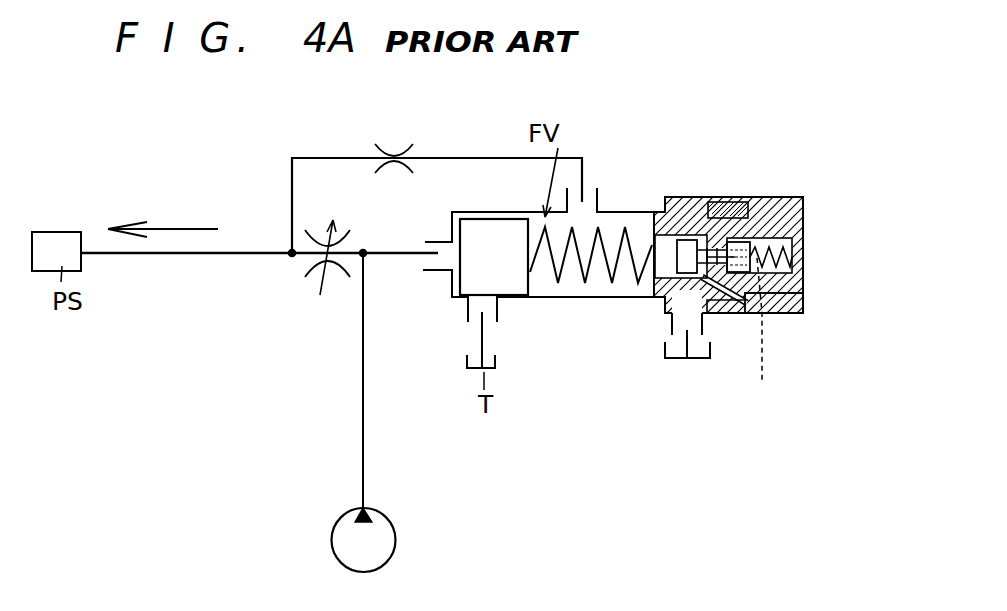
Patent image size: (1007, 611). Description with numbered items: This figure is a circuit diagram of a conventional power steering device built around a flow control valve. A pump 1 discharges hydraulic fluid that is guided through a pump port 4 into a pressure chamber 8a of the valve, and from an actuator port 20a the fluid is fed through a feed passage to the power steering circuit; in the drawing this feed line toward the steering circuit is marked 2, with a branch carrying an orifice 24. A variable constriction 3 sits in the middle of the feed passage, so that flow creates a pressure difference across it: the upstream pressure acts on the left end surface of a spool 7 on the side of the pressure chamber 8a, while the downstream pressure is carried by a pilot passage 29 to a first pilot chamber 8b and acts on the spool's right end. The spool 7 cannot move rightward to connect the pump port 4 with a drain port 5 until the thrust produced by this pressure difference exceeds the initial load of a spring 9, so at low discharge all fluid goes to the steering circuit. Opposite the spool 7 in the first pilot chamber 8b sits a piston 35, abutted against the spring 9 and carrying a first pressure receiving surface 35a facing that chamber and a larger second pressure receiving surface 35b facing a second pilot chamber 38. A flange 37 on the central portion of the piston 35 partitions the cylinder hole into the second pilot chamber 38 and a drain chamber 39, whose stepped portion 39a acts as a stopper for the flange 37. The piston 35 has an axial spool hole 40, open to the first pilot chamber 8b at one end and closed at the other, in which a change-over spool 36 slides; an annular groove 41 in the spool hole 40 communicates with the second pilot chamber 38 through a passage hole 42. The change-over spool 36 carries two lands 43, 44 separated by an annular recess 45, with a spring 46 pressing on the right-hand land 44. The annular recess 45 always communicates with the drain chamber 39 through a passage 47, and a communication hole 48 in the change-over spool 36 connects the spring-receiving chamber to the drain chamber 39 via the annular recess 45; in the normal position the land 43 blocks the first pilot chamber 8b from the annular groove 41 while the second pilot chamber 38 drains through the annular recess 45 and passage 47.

The pump 1 is at (397, 537).
The supply passage 2 is at (168, 253).
The variable constriction 3 is at (317, 268).
The pump port 4 is at (426, 243).
The drain port 5 is at (468, 313).
The spool 7 is at (503, 286).
The pressure chamber 8a is at (452, 287).
The first pilot chamber 8b is at (607, 210).
The spring 9 is at (556, 282).
The actuator port 20a is at (290, 257).
The orifice 24 is at (395, 152).
The pilot passage 29 is at (492, 157).
The piston 35 is at (806, 196).
The first pressure receiving surface 35a is at (651, 224).
The second pressure receiving surface 35b is at (812, 205).
The change-over spool 36 is at (677, 271).
The flange 37 is at (746, 212).
The second pilot chamber 38 is at (803, 303).
The drain chamber 39 is at (702, 305).
The stepped portion 39a is at (672, 197).
The spool hole 40 is at (772, 242).
The annular groove 41 is at (668, 318).
The passage hole 42 is at (738, 305).
The land 43 is at (688, 240).
The land 44 is at (768, 288).
The annular recess 45 is at (722, 251).
The spring 46 is at (803, 256).
The passage 47 is at (704, 249).
The communication hole 48 is at (766, 336).